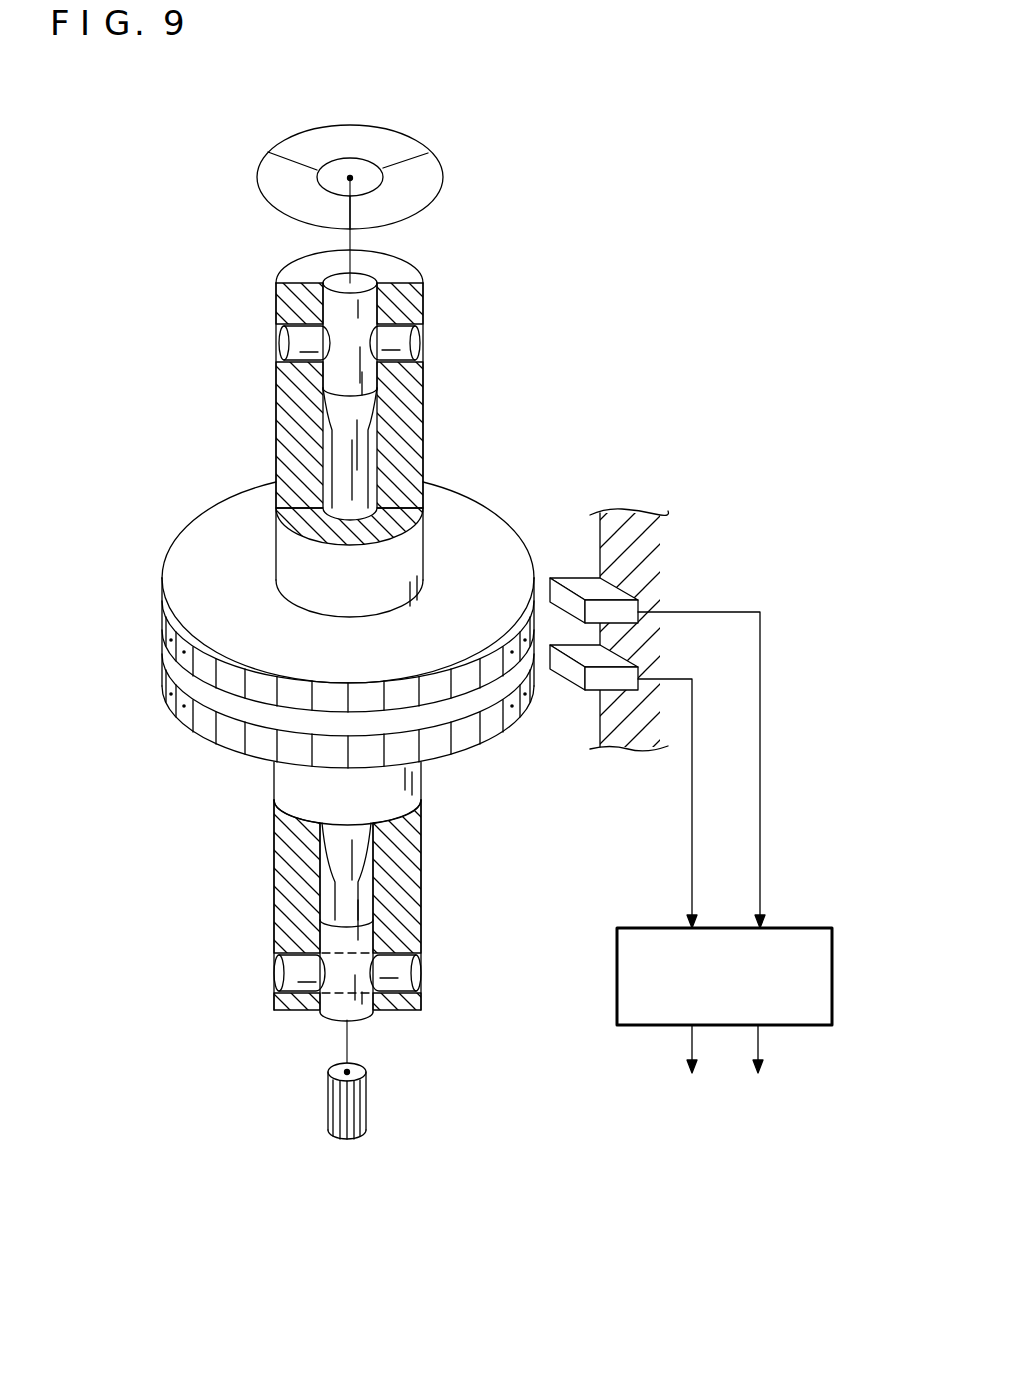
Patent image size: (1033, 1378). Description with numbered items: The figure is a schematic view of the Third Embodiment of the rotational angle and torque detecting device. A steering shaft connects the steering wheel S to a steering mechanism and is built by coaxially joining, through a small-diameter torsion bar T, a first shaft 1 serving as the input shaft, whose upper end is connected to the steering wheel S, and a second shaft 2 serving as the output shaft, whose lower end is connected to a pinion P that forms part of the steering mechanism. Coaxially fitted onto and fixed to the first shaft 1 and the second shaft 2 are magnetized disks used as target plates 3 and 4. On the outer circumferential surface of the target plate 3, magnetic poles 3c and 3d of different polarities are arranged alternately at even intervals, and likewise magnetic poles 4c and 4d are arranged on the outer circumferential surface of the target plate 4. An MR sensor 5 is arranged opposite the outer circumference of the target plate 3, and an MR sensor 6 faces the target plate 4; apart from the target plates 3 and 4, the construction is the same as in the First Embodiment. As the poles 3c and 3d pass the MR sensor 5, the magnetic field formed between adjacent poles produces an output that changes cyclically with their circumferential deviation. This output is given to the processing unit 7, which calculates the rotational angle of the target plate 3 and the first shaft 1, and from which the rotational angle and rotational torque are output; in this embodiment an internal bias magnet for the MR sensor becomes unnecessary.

The steering wheel S is at (260, 172).
The first shaft 1 is at (276, 394).
The torsion bar T is at (356, 452).
The target plate 3 is at (207, 534).
The magnetic pole 3c is at (232, 680).
The magnetic pole 3d is at (211, 720).
The target plate 4 is at (165, 657).
The magnetic pole 4c is at (226, 746).
The magnetic pole 4d is at (243, 754).
The second shaft 2 is at (274, 915).
The pinion P is at (328, 1100).
The MR sensor 5 is at (572, 586).
The MR sensor 6 is at (565, 668).
The processing unit 7 is at (617, 968).